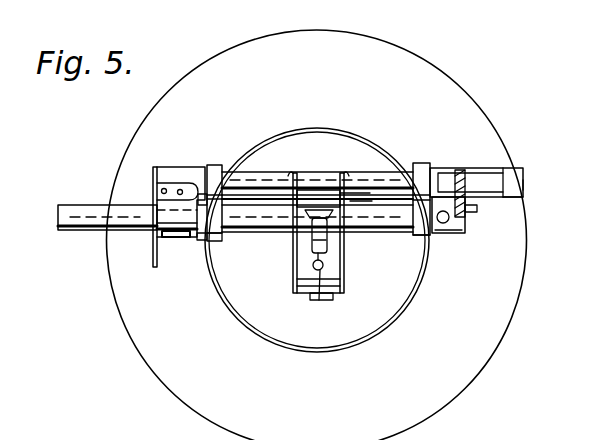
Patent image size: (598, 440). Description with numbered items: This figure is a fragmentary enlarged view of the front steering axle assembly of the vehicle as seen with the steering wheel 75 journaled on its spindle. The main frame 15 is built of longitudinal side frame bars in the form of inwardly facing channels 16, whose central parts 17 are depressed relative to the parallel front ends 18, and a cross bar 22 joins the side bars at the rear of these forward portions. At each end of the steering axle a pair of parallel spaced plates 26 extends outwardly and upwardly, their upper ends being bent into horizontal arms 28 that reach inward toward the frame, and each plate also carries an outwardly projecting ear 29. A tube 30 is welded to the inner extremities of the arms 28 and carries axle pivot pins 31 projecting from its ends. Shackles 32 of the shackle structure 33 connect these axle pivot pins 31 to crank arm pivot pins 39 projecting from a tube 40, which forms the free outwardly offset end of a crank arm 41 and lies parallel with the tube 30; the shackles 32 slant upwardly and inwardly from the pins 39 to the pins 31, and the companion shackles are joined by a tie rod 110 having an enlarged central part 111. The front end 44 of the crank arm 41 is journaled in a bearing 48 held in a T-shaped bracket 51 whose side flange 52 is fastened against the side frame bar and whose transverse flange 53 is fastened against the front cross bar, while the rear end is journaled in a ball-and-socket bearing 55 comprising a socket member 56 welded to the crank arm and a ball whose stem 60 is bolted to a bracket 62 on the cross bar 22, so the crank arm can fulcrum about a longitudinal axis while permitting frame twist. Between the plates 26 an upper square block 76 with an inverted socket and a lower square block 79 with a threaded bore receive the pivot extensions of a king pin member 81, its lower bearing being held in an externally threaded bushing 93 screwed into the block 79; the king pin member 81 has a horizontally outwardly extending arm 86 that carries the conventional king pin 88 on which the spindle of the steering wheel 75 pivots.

The main frame 15 is at (531, 170).
The longitudinal side frame bars 16 is at (533, 183).
The central parts 17 is at (525, 200).
The front ends 18 is at (172, 182).
The cross bar 22 is at (485, 168).
The plates 26 is at (292, 264).
The arms 28 is at (336, 198).
The ear 29 is at (350, 232).
The tube 30 is at (372, 172).
The axle pivot pins 31 is at (238, 176).
The shackles 32 is at (215, 165).
The shackle structure 33 is at (216, 247).
The crank arm pivot pins 39 is at (412, 237).
The tube 40 is at (226, 232).
The crank arm 41 is at (200, 236).
The front end 44 is at (72, 206).
The bearing 48 is at (175, 246).
The bracket 51 is at (144, 176).
The side flange 52 is at (170, 185).
The transverse flange 53 is at (153, 256).
The ball-and-socket bearing 55 is at (458, 233).
The socket member 56 is at (450, 236).
The stem 60 is at (478, 209).
The bracket 62 is at (459, 170).
The steering wheel 75 is at (158, 370).
The square block 76 is at (305, 198).
The square block 79 is at (305, 291).
The king pin member 81 is at (323, 265).
The arm 86 is at (313, 243).
The king pin 88 is at (319, 302).
The threaded metal bushing 93 is at (322, 300).
The tie rod 110 is at (356, 192).
The enlarged central part 111 is at (362, 200).